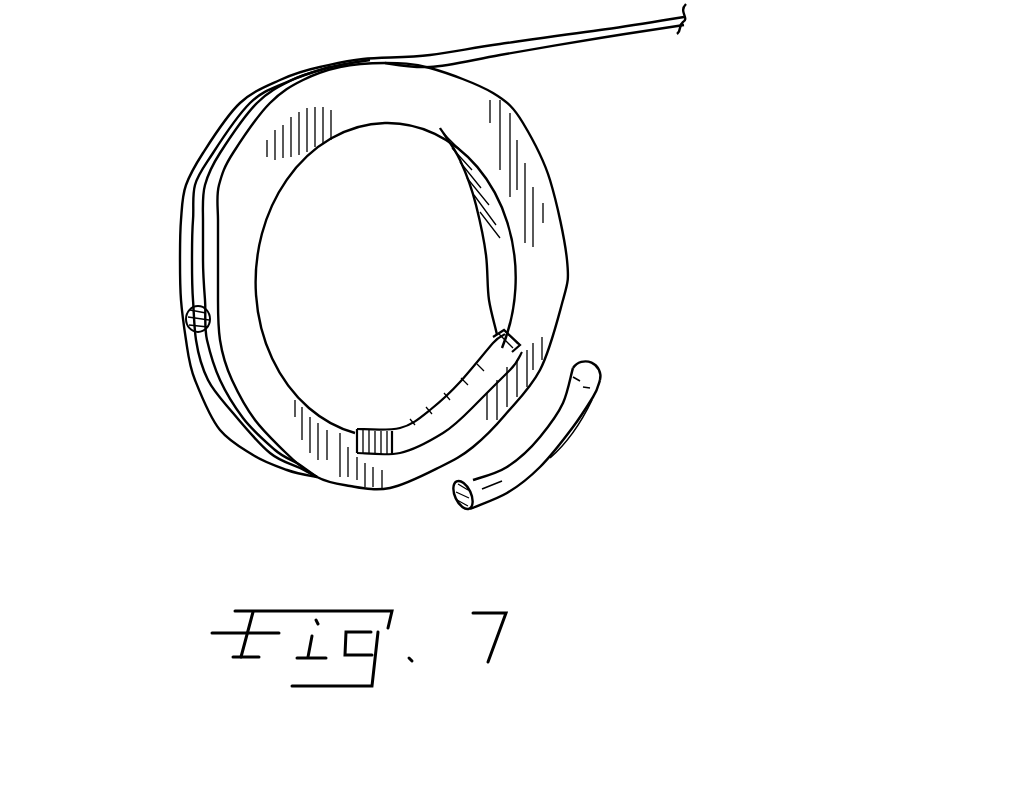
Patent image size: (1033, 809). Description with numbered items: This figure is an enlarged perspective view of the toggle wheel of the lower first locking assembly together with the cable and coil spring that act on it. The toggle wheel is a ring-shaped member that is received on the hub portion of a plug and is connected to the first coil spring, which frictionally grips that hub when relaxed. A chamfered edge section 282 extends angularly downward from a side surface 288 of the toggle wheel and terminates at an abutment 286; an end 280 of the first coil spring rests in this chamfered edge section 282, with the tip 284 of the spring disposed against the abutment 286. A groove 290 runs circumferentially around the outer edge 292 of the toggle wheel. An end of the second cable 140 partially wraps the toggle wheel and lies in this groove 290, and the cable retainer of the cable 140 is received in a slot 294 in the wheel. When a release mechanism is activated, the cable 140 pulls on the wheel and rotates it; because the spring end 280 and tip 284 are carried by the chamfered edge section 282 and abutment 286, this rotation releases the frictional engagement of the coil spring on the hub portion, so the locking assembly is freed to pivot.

The second cable 140 is at (627, 25).
The end of first coil spring 280 is at (558, 454).
The chamfered edge section 282 is at (418, 429).
The tip of spring 284 is at (593, 370).
The abutment 286 is at (490, 360).
The side surface 288 is at (412, 115).
The groove 290 is at (210, 373).
The outer edge 292 is at (237, 438).
The slot 294 is at (157, 331).